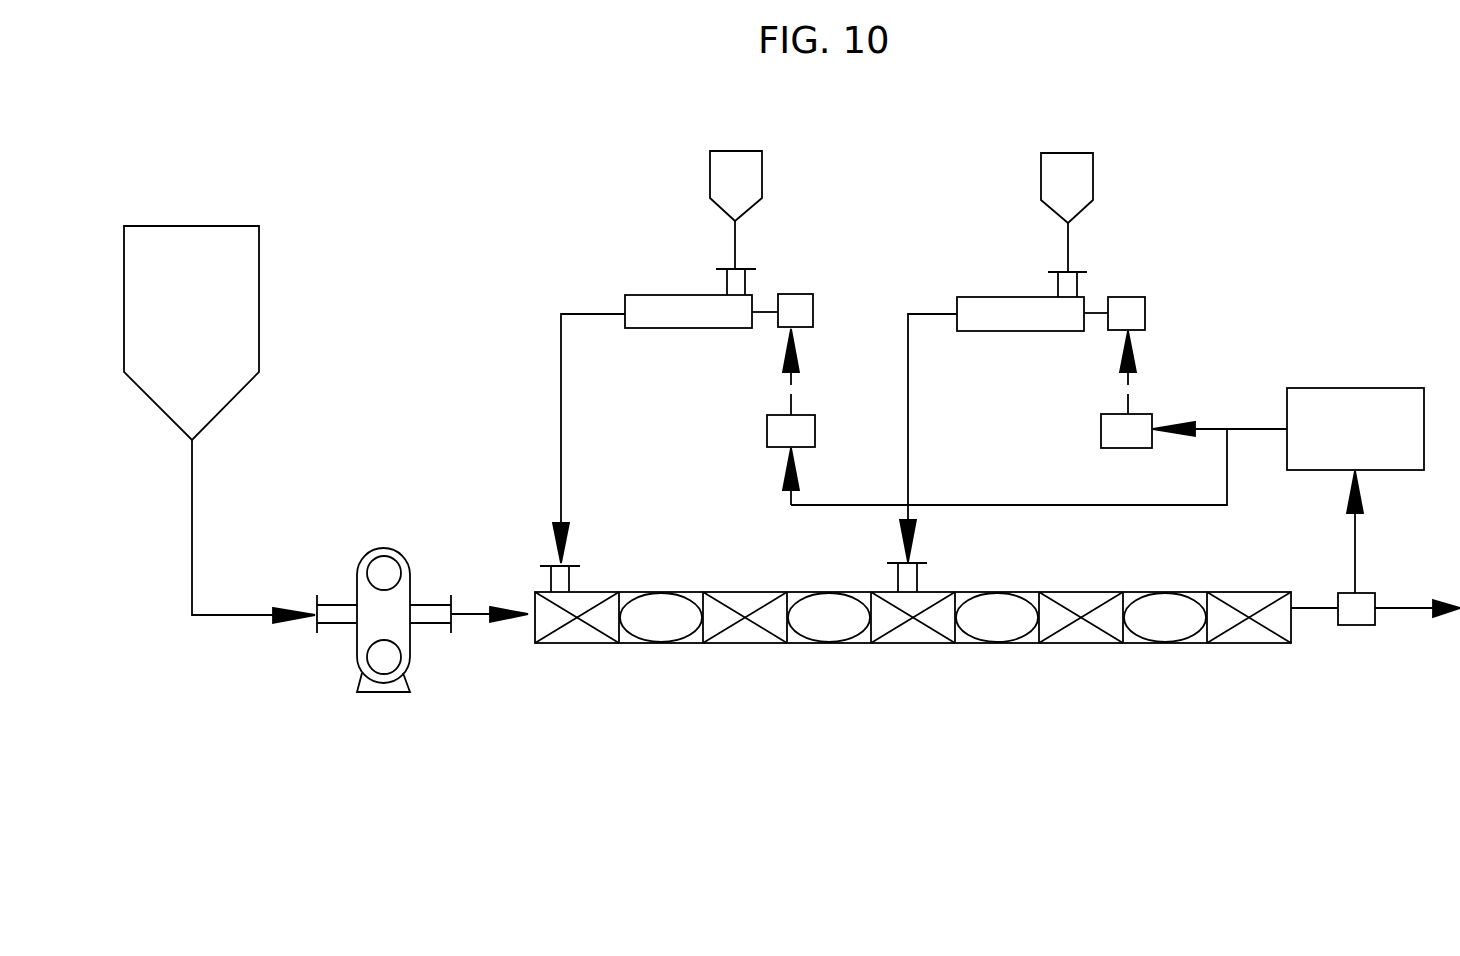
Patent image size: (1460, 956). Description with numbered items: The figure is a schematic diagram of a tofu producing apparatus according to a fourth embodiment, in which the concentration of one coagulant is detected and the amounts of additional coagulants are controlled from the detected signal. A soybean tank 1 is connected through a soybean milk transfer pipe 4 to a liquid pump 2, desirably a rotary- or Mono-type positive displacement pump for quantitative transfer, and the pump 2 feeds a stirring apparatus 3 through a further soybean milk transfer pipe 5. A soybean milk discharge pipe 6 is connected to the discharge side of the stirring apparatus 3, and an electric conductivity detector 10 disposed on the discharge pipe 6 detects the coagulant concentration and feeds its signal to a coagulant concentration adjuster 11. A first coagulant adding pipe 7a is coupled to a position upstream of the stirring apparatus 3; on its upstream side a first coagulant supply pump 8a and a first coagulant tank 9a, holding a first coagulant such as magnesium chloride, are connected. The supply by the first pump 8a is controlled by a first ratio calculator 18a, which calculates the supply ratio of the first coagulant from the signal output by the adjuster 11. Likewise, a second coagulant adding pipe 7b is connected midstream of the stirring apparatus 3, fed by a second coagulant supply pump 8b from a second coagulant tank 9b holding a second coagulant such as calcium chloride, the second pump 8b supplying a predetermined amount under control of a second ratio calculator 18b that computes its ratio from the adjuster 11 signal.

The soybean tank 1 is at (259, 295).
The liquid pump 2 is at (380, 693).
The stirring apparatus 3 is at (819, 666).
The soybean milk transfer pipe 4 is at (232, 615).
The soybean milk transfer pipe 5 is at (473, 617).
The soybean milk discharge pipe 6 is at (1402, 603).
The first coagulant adding pipe 7a is at (559, 366).
The second coagulant adding pipe 7b is at (907, 379).
The first coagulant supply pump 8a is at (653, 293).
The second coagulant supply pump 8b is at (984, 296).
The first coagulant tank 9a is at (732, 150).
The second coagulant tank 9b is at (1066, 152).
The electric conductivity detector 10 is at (1358, 626).
The coagulant concentration adjuster 11 is at (1342, 387).
The first ratio calculator 18a is at (766, 433).
The second ratio calculator 18b is at (1100, 434).